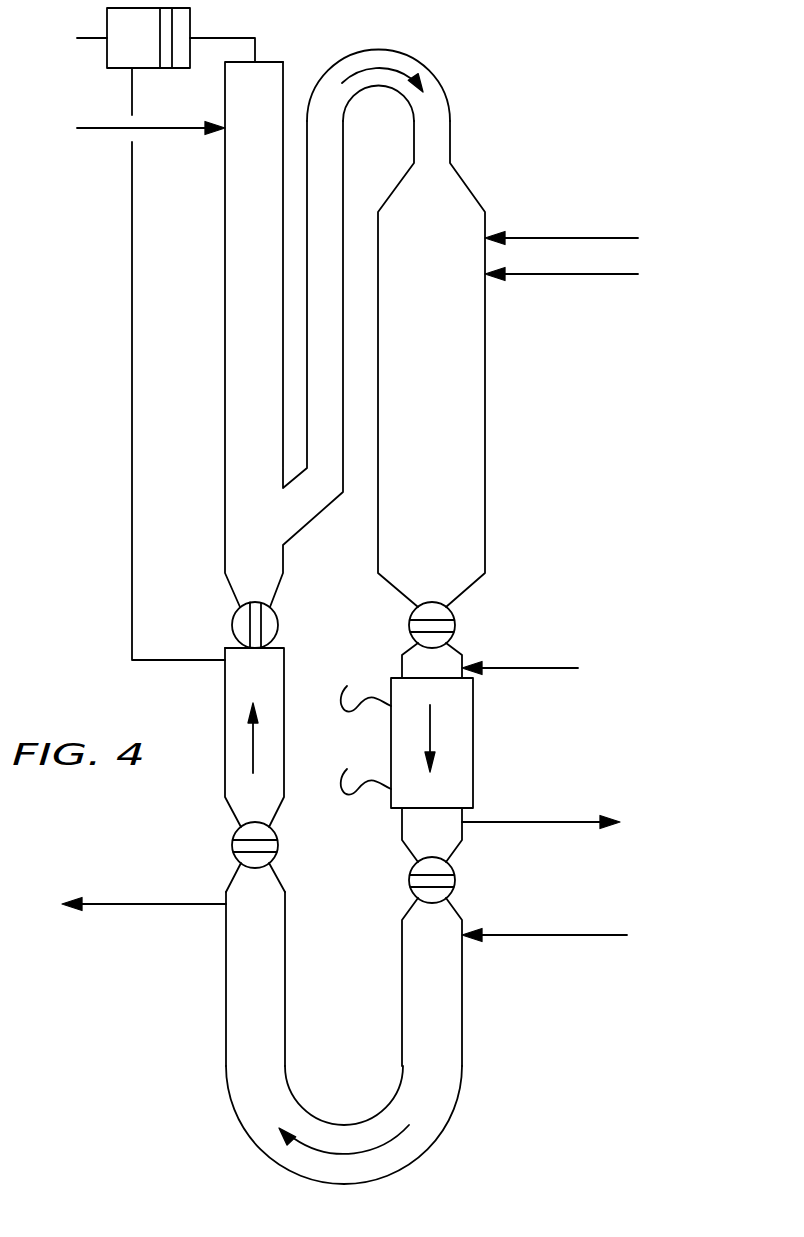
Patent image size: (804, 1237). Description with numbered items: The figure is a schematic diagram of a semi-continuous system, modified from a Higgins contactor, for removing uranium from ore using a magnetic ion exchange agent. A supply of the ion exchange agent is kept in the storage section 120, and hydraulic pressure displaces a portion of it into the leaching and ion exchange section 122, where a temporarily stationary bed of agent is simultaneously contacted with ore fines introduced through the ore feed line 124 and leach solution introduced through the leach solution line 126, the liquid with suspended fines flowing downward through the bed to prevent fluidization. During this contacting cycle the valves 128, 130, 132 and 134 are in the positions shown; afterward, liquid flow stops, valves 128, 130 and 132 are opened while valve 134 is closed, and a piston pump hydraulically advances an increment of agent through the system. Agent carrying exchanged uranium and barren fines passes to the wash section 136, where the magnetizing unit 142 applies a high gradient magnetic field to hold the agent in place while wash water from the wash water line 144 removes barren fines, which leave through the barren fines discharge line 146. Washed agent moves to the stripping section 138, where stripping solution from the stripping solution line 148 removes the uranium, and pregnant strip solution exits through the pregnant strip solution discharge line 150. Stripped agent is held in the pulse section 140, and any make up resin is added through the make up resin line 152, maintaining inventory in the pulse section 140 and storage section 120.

The storage section 120 is at (270, 243).
The leaching and ion exchange section 122 is at (445, 375).
The ore feed line 124 is at (600, 232).
The leach solution line 126 is at (620, 277).
The valve 128 is at (455, 623).
The valve 130 is at (455, 879).
The valve 132 is at (278, 845).
The valve 134 is at (278, 624).
The wash section 136 is at (447, 841).
The stripping section 138 is at (447, 968).
The pulse section 140 is at (270, 682).
The magnetizing unit 142 is at (473, 756).
The wash water line 144 is at (562, 671).
The barren fines discharge line 146 is at (595, 825).
The stripping solution line 148 is at (620, 938).
The pregnant strip solution discharge line 150 is at (97, 900).
The make up resin line 152 is at (178, 133).